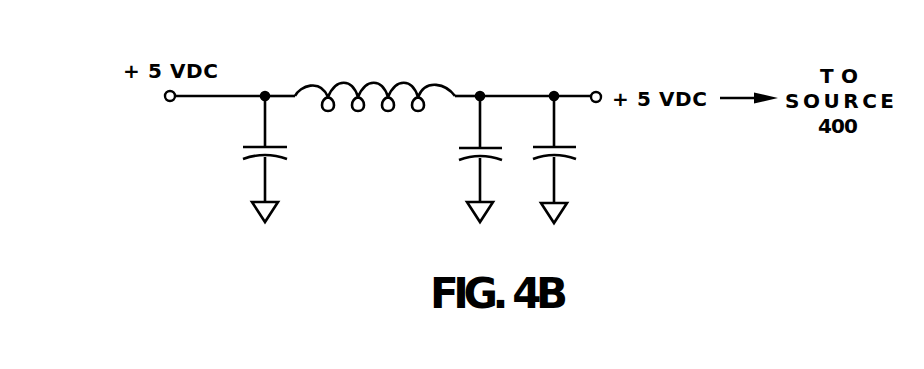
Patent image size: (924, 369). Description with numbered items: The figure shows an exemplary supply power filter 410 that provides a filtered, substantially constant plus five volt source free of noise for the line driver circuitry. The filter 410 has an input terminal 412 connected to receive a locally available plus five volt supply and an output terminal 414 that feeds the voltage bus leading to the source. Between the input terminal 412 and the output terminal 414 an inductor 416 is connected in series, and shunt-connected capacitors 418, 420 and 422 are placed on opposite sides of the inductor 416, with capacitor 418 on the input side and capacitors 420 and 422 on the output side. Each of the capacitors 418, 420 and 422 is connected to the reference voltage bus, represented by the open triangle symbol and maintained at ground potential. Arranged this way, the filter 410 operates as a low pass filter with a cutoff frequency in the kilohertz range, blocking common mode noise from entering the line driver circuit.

The filter 410 is at (525, 37).
The input terminal 412 is at (164, 101).
The output terminal 414 is at (598, 90).
The inductor 416 is at (347, 85).
The capacitor 418 is at (285, 156).
The capacitor 420 is at (461, 160).
The capacitor 422 is at (574, 157).